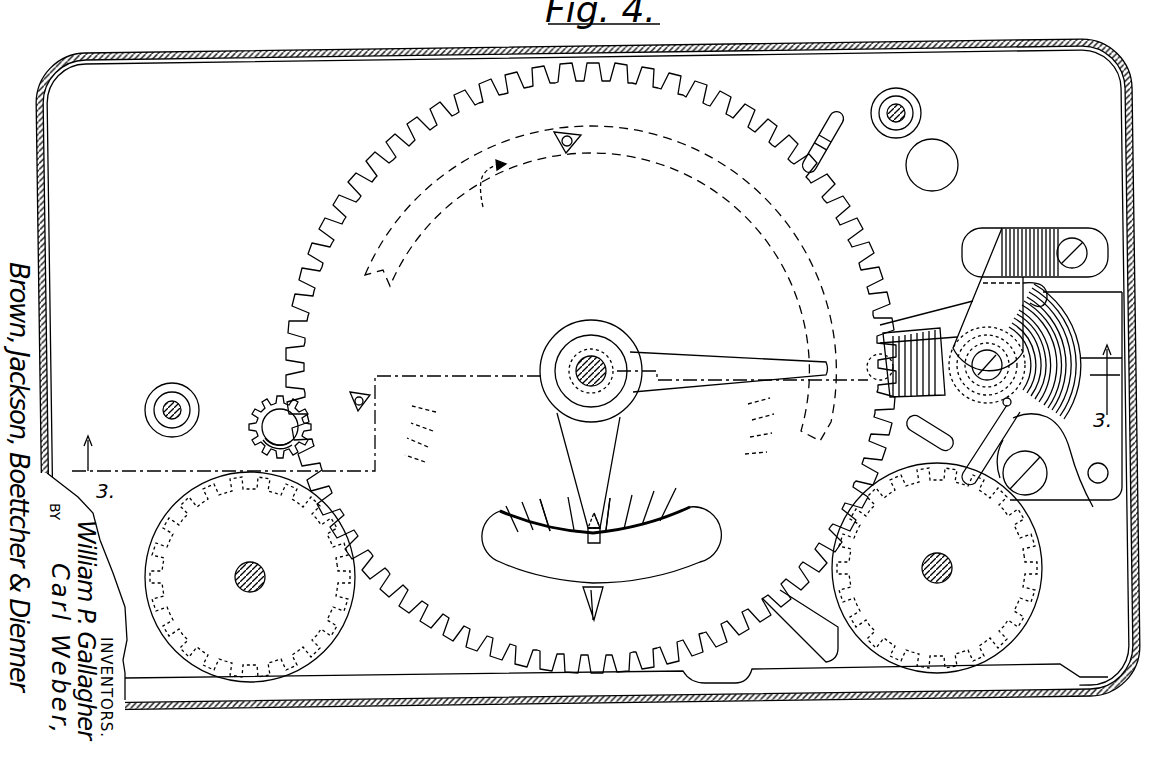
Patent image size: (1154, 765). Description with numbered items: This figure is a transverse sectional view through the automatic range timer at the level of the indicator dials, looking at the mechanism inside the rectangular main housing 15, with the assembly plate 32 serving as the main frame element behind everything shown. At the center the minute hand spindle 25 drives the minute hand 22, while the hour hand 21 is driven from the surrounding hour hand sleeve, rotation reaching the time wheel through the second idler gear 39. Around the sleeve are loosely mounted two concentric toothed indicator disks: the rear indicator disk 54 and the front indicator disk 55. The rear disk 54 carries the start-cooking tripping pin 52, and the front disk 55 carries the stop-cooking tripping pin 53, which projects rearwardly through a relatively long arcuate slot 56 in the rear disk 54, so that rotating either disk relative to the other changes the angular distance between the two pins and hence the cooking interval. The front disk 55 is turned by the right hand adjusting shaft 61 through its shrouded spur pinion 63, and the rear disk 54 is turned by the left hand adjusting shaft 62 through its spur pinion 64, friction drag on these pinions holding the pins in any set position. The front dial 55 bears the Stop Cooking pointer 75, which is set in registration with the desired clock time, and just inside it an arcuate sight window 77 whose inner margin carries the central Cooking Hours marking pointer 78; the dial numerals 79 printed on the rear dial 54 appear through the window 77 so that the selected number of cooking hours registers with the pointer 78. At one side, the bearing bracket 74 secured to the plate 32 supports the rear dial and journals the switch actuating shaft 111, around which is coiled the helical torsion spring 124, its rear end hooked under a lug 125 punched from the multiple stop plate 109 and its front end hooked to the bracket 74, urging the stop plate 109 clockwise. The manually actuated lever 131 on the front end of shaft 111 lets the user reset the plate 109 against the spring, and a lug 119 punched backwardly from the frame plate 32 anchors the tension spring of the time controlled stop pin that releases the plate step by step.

The main housing 15 is at (272, 51).
The assembly plate 32 is at (62, 188).
The front indicator disk 55 is at (340, 316).
The second idler gear 39 is at (268, 406).
The tripping pin 52 is at (356, 411).
The tripping pin 53 is at (563, 153).
The arcuate slot 56 is at (492, 193).
The minute hand spindle 25 is at (590, 364).
The minute hand 22 is at (701, 370).
The hour hand 21 is at (589, 451).
The rear indicator disk 54 is at (523, 560).
The sight window 77 is at (535, 528).
The marking pointer 78 is at (600, 516).
The dial numerals 79 is at (681, 547).
The Stop Cooking pointer 75 is at (588, 617).
The adjusting shaft 62 is at (253, 590).
The spur pinion 64 is at (205, 626).
The adjusting shaft 61 is at (943, 582).
The spur pinion 63 is at (1003, 600).
The lug 119 is at (840, 140).
The manually actuated lever 131 is at (1055, 228).
The multiple stop plate 109 is at (908, 325).
The switch actuating shaft 111 is at (1073, 313).
The bearing bracket 74 is at (1070, 440).
The helical torsion spring 124 is at (1005, 407).
The lug 125 is at (926, 425).